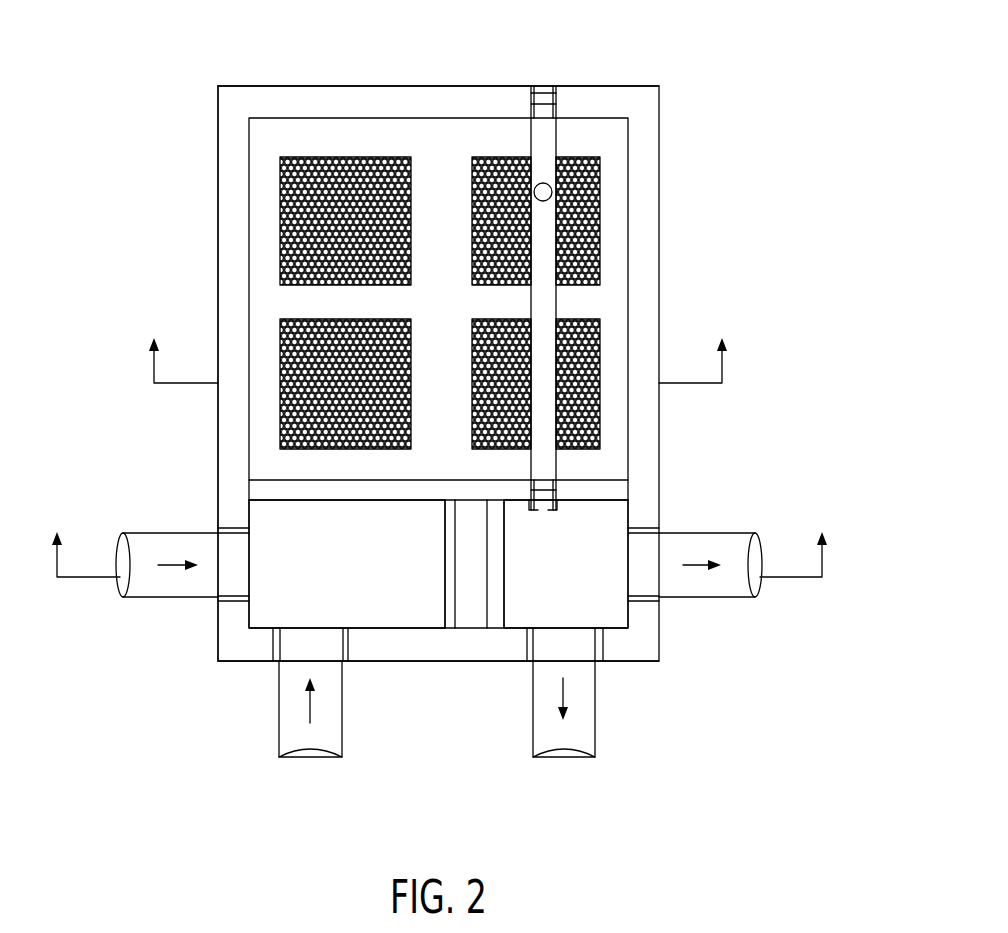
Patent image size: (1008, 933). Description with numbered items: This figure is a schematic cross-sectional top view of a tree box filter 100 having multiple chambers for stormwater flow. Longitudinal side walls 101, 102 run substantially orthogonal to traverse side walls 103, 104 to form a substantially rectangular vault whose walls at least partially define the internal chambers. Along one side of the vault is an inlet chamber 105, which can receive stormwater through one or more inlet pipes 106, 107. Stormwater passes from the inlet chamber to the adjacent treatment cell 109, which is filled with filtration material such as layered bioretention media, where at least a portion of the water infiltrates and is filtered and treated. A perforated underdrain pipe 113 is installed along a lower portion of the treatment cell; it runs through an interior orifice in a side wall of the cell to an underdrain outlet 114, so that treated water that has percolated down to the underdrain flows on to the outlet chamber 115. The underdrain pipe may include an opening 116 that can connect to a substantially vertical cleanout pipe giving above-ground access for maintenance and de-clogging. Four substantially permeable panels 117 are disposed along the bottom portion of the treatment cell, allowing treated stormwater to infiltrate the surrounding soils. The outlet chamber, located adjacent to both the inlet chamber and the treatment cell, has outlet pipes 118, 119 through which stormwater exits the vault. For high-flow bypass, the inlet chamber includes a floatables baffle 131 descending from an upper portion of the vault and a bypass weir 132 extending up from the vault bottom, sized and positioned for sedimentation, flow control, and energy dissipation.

The tree box filter 100 is at (773, 139).
The longitudinal side wall 101 is at (659, 113).
The longitudinal side wall 102 is at (217, 100).
The traverse side wall 103 is at (442, 86).
The traverse side wall 104 is at (427, 661).
The inlet chamber 105 is at (283, 597).
The inlet pipe 106 is at (118, 551).
The inlet pipe 107 is at (278, 707).
The treatment cell 109 is at (608, 300).
The underdrain pipe 113 is at (545, 290).
The underdrain outlet 114 is at (558, 510).
The outlet chamber 115 is at (597, 598).
The opening 116 is at (552, 192).
The substantially permeable panel 117 is at (280, 341).
The outlet pipe 118 is at (760, 552).
The outlet pipe 119 is at (597, 705).
The floatables baffle 131 is at (445, 575).
The bypass weir 132 is at (504, 558).